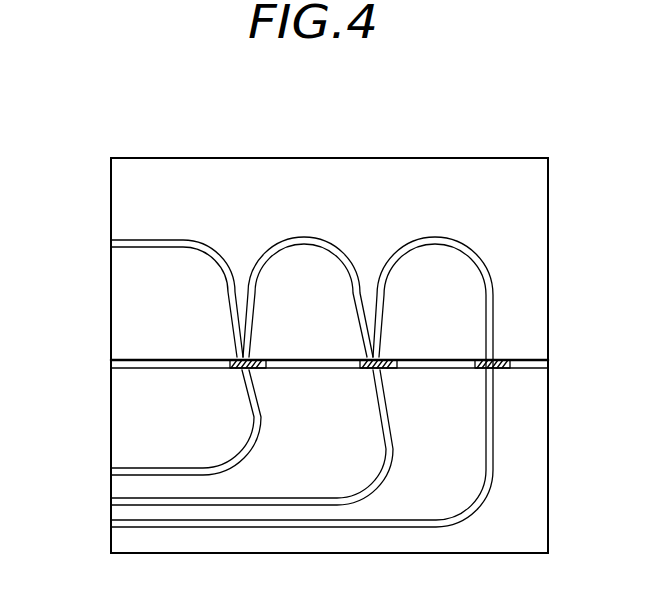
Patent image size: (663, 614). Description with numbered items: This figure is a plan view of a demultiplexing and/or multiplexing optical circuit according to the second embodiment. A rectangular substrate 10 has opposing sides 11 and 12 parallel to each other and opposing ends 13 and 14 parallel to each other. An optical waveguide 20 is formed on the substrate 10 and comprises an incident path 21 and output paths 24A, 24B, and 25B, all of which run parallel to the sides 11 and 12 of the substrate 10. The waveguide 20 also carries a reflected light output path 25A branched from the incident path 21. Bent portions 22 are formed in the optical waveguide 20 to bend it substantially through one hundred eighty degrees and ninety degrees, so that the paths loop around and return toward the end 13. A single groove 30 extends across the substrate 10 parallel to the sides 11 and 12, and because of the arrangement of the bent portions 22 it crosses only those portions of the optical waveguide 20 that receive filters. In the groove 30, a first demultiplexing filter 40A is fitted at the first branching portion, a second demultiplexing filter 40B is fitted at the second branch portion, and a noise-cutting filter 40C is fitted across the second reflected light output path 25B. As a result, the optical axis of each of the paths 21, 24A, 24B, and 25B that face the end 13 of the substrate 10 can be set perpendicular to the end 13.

The substrate 10 is at (347, 168).
The side 11 is at (518, 157).
The side 12 is at (463, 554).
The end 13 is at (110, 402).
The end 14 is at (550, 500).
The optical waveguide 20 is at (325, 355).
The incident path 21 is at (140, 245).
The bent portion 22 is at (272, 234).
The transmitted light output path 24A is at (168, 470).
The output path 24B is at (248, 498).
The reflected light output path 25A is at (298, 240).
The reflected light output path 25B is at (437, 240).
The groove 30 is at (550, 364).
The first demultiplexing filter 40A is at (240, 358).
The second demultiplexing filter 40B is at (372, 358).
The noise-cutting filter 40C is at (478, 360).